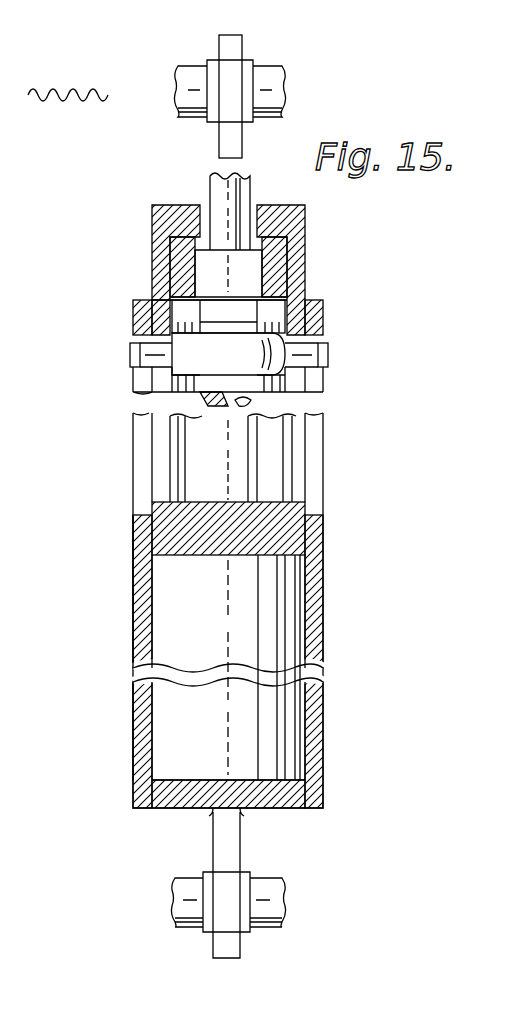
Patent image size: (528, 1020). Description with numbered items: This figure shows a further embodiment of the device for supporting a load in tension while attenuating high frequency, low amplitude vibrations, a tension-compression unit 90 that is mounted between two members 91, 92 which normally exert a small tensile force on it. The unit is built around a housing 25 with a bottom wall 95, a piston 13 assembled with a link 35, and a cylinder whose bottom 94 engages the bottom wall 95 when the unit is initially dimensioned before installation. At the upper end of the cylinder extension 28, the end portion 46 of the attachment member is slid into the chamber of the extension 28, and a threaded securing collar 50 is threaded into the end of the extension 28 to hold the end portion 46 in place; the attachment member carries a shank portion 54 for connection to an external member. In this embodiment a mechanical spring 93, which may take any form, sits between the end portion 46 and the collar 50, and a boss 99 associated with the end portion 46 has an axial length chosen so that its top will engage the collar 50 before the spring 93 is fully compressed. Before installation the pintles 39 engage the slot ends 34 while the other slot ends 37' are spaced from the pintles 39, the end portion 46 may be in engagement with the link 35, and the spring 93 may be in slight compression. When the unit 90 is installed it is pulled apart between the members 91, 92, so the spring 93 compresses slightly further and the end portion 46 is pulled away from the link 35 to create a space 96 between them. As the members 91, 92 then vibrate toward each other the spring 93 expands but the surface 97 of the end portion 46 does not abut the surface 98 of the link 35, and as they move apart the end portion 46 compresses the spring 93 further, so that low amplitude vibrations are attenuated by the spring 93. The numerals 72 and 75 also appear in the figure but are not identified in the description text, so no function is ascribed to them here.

The piston 13 is at (175, 437).
The housing 25 is at (130, 696).
The cylinder extension 28 is at (160, 268).
The slot ends 34 is at (134, 345).
The link 35 is at (185, 388).
The slot ends 37' is at (243, 326).
The pintles 39 is at (134, 364).
The end portion 46 is at (325, 313).
The threaded securing collar 50 is at (210, 200).
The shank portion 54 is at (219, 147).
The rod 72 is at (322, 690).
The wavy indicator 75 is at (78, 98).
The unit 90 is at (389, 478).
The member 91 is at (272, 84).
The member 92 is at (178, 890).
The mechanical spring 93 is at (290, 266).
The bottom 94 is at (267, 787).
The bottom wall 95 is at (167, 770).
The space 96 is at (290, 284).
The surface 97 is at (228, 355).
The surface 98 is at (150, 291).
The boss 99 is at (154, 244).